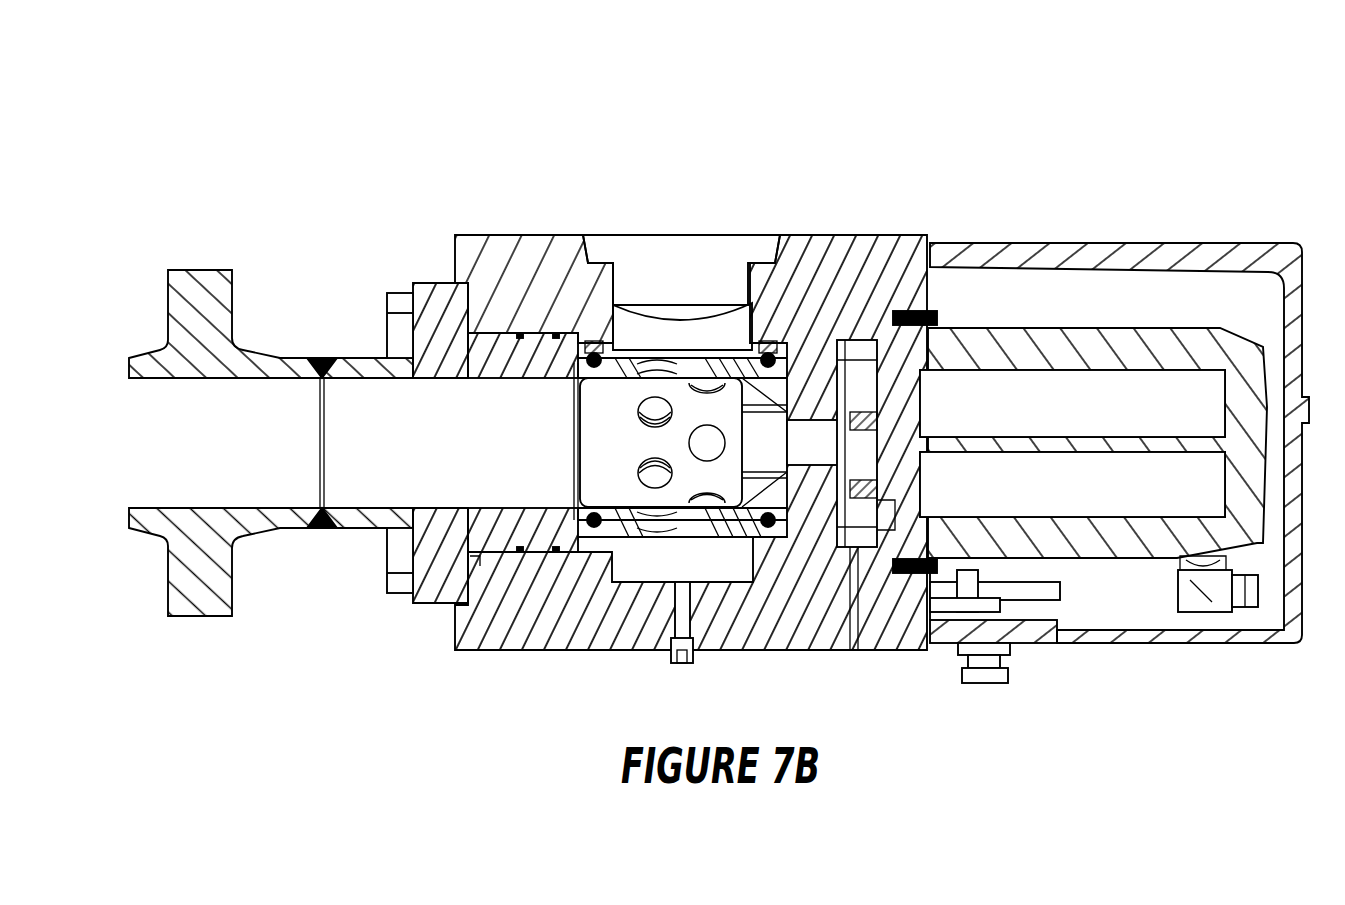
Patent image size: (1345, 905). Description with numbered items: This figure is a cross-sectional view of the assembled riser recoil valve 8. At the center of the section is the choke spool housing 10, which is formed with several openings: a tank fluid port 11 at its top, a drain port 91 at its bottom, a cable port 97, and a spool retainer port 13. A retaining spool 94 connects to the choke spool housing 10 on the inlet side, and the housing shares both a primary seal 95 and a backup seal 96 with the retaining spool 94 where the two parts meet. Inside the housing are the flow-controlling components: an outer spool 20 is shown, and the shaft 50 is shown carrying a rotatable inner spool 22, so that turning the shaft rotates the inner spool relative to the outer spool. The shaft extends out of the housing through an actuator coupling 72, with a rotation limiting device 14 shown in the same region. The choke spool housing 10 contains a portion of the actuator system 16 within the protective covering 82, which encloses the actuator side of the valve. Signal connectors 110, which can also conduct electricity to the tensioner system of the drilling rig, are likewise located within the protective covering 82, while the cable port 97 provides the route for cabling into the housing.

The riser recoil valve 8 is at (132, 142).
The choke spool housing 10 is at (852, 237).
The tank fluid port 11 is at (737, 234).
The spool retainer port 13 is at (497, 552).
The rotation limiting device 14 is at (900, 436).
The actuator system 16 is at (1073, 328).
The outer spool 20 is at (697, 356).
The rotatable inner spool 22 is at (627, 518).
The shaft 50 is at (746, 440).
The actuator coupling 72 is at (900, 522).
The protective covering 82 is at (1138, 244).
The drain port 91 is at (690, 655).
The retaining spool 94 is at (354, 356).
The primary seal 95 is at (556, 548).
The backup seal 96 is at (521, 378).
The cable port 97 is at (1010, 682).
The signal connectors 110 is at (1176, 596).